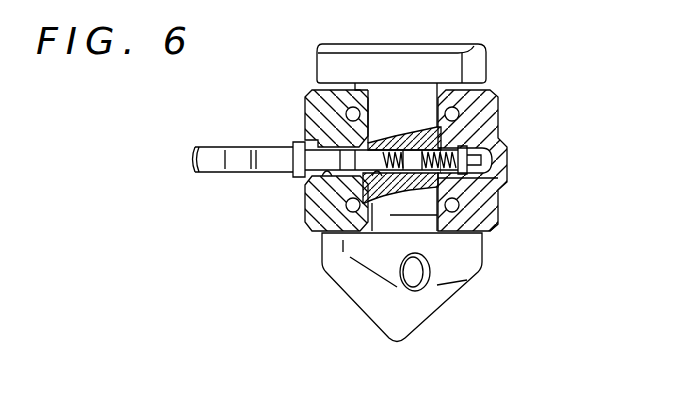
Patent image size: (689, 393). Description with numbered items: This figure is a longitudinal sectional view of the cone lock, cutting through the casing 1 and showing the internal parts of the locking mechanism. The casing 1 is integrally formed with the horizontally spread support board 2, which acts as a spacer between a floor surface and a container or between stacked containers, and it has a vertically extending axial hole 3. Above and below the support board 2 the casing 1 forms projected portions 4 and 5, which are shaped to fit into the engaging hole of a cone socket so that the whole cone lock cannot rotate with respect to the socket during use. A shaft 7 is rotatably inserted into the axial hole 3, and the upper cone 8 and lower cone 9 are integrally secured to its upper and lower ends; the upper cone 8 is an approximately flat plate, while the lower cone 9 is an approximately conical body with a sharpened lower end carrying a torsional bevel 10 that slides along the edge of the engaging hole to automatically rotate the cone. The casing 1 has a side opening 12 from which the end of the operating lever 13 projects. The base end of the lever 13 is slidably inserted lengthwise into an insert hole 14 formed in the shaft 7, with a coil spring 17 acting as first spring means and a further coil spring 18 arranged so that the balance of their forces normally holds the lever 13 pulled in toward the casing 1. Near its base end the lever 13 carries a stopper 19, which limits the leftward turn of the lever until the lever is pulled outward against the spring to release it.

The casing 1 is at (304, 94).
The support board 2 is at (502, 160).
The axial hole 3 is at (485, 217).
The upper projected portion 4 is at (472, 105).
The lower projected portion 5 is at (493, 226).
The shaft 7 is at (388, 110).
The upper cone 8 is at (438, 62).
The lower cone 9 is at (443, 298).
The torsional bevel 10 is at (370, 296).
The opening 12 is at (327, 177).
The operating lever 13 is at (238, 146).
The insert hole 14 is at (340, 255).
The coil spring 17 is at (468, 132).
The coil spring 18 is at (376, 198).
The stopper 19 is at (297, 177).